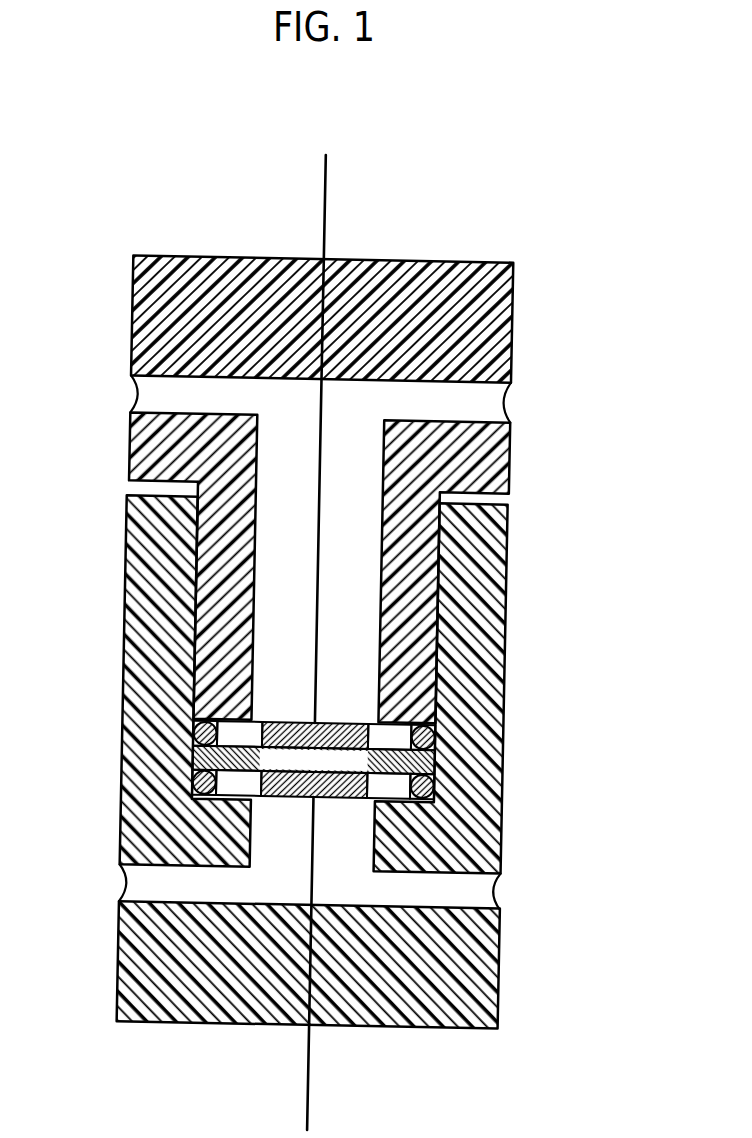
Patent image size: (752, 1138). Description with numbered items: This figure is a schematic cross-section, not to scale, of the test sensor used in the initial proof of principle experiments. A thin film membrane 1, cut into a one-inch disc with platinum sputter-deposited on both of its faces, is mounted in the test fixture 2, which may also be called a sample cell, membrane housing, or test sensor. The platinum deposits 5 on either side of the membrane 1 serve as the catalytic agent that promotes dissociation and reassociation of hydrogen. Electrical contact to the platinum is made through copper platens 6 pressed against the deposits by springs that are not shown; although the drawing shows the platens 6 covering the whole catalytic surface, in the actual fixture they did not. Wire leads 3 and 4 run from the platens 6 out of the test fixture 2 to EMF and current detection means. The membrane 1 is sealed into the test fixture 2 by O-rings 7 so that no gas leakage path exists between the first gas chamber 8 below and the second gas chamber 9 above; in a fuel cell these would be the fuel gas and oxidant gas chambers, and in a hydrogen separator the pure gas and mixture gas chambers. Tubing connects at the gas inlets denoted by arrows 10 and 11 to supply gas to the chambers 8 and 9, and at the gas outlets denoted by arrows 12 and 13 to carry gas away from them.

The membrane 1 is at (313, 748).
The test fixture 2 is at (316, 642).
The wire lead 3 is at (309, 439).
The wire lead 4 is at (305, 963).
The platinum deposits 5 is at (329, 749).
The copper platens 6 is at (313, 756).
The O-rings 7 is at (309, 758).
The first gas chamber 8 is at (295, 870).
The second gas chamber 9 is at (290, 545).
The gas inlet arrow 10 is at (96, 886).
The gas inlet arrow 11 is at (100, 398).
The gas outlet arrow 12 is at (528, 893).
The gas outlet arrow 13 is at (528, 404).